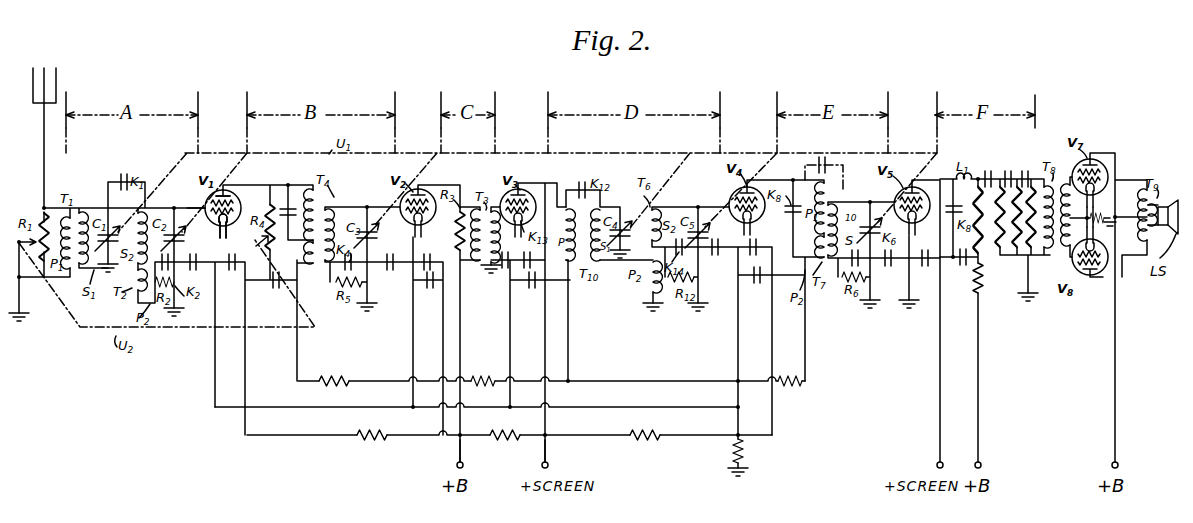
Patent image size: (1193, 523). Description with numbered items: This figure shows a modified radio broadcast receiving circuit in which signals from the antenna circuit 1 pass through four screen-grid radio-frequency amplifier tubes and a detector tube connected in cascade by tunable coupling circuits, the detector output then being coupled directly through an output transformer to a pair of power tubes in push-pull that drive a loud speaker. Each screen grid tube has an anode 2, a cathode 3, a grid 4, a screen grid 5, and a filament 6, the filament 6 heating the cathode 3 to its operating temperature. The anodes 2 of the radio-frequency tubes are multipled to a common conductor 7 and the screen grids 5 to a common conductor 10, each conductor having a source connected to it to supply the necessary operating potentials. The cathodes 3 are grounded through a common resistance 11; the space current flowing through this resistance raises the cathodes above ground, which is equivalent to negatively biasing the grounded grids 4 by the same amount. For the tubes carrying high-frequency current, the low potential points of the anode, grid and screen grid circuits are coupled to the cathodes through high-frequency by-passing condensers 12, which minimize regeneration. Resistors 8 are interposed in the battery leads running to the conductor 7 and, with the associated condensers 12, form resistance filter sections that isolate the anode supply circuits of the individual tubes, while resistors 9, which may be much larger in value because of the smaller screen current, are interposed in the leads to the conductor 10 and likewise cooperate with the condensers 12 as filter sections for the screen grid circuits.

The antenna circuit 1 is at (34, 107).
The anode 2 is at (228, 190).
The cathode 3 is at (213, 219).
The grid 4 is at (207, 194).
The screen grid 5 is at (241, 199).
The filament 6 is at (224, 224).
The conductor 7 is at (457, 455).
The resistors 8 is at (339, 375).
The resistors 9 is at (641, 452).
The conductor 10 is at (548, 455).
The common resistance 11 is at (748, 452).
The high-frequency by-passing condensers 12 is at (500, 268).